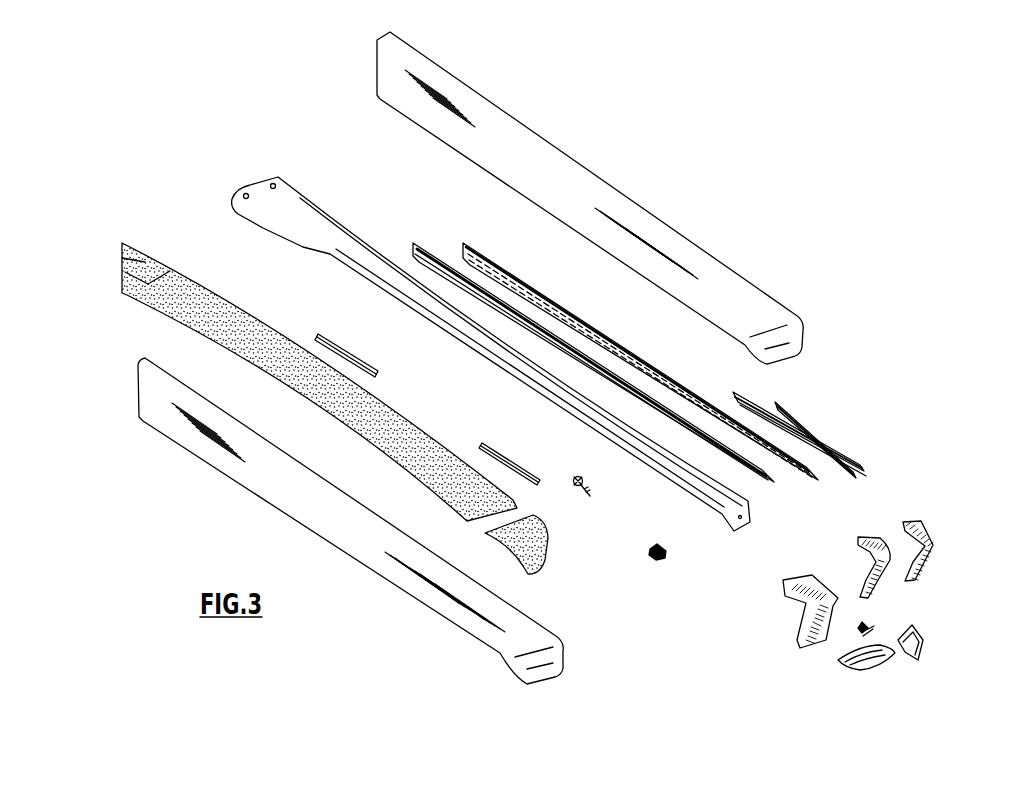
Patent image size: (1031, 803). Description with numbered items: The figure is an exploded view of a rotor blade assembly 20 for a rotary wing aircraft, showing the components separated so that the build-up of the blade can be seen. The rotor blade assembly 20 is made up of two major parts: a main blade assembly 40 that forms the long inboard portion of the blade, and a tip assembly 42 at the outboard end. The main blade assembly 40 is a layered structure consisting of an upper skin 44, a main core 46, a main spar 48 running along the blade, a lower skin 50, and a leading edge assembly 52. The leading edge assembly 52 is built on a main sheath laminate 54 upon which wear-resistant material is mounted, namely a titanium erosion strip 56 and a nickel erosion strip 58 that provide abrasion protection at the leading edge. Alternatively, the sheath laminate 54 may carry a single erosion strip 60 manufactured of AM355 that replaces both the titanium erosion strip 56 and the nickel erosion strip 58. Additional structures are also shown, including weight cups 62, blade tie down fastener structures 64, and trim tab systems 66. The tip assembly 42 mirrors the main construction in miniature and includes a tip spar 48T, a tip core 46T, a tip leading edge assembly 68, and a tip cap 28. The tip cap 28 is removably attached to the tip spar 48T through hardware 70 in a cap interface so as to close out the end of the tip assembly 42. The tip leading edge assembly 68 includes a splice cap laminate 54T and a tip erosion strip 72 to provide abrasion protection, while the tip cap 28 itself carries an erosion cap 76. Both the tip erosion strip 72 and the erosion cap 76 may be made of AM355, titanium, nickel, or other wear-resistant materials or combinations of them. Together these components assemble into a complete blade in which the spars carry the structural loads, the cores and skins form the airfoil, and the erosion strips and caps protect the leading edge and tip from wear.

The rotor blade assembly 20 is at (758, 230).
The tip cap 28 is at (902, 678).
The main blade assembly 40 is at (862, 255).
The tip assembly 42 is at (957, 627).
The upper skin 44 is at (648, 223).
The main core 46 is at (161, 318).
The tip core 46T is at (560, 567).
The main spar 48 is at (313, 220).
The tip spar 48T is at (786, 643).
The lower skin 50 is at (166, 428).
The leading edge assembly 52 is at (872, 447).
The main sheath laminate 54 is at (773, 484).
The splice cap laminate 54T is at (858, 541).
The titanium erosion strip 56 is at (853, 473).
The nickel erosion strip 58 is at (806, 426).
The single erosion strip 60 is at (818, 481).
The weight cups 62 is at (666, 559).
The blade tie down fastener structures 64 is at (590, 497).
The trim tab systems 66 is at (336, 342).
The tip leading edge assembly 68 is at (966, 586).
The hardware 70 is at (874, 627).
The tip erosion strip 72 is at (921, 558).
The erosion cap 76 is at (918, 658).